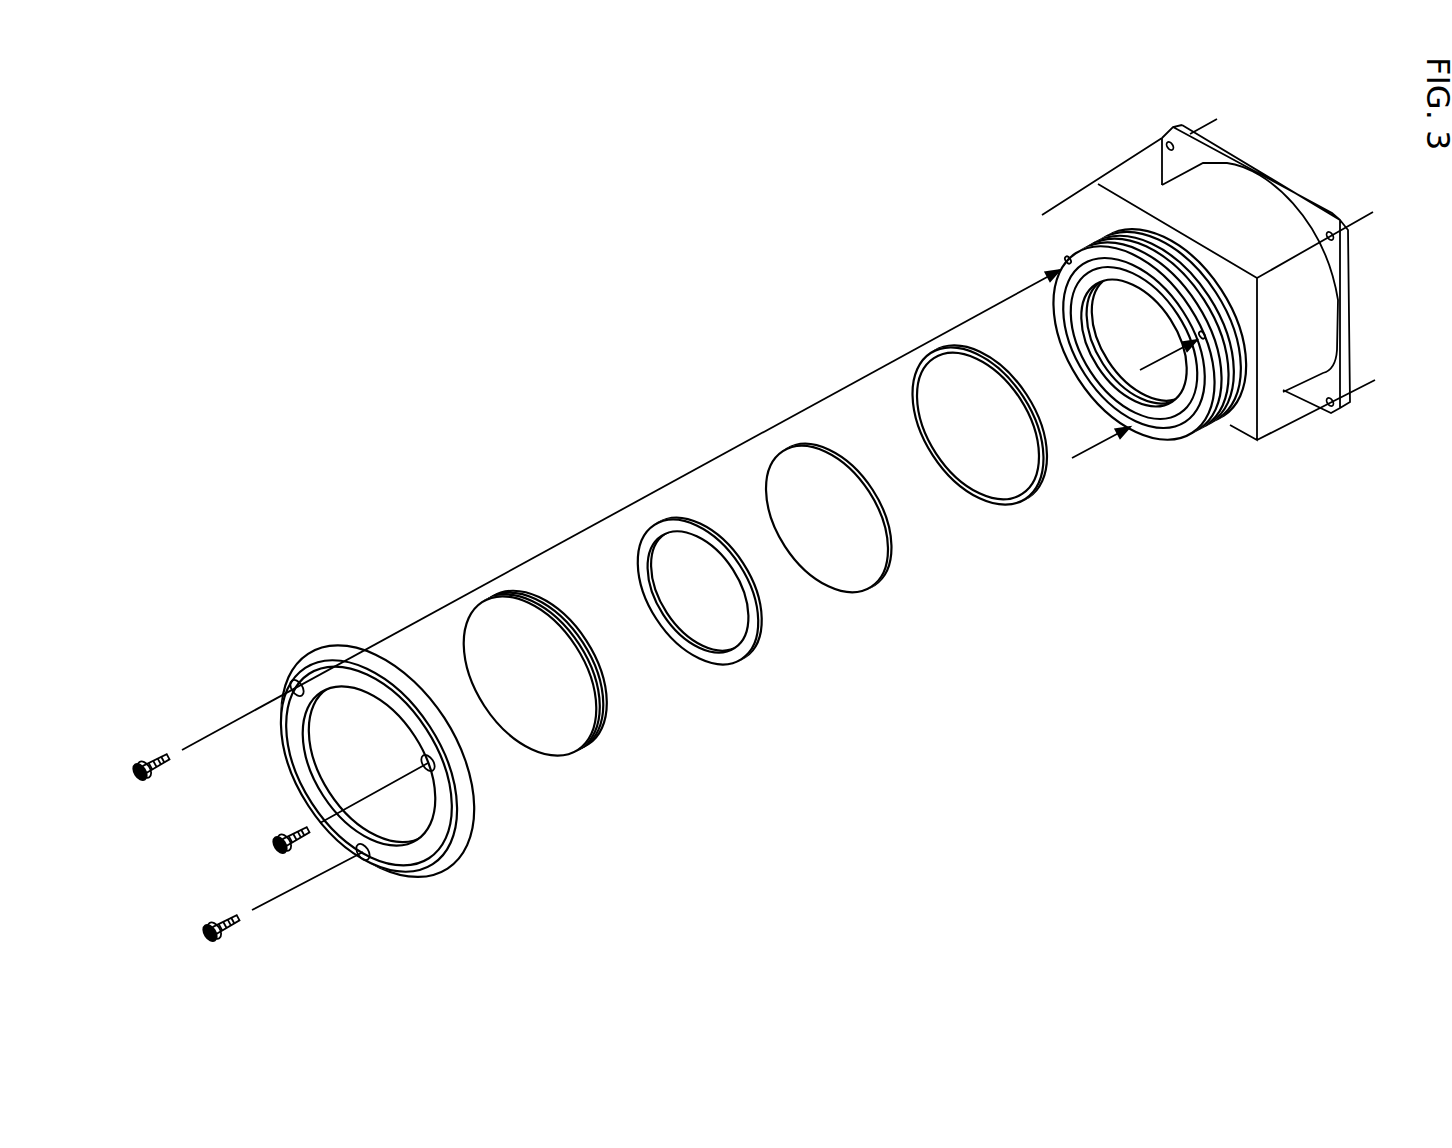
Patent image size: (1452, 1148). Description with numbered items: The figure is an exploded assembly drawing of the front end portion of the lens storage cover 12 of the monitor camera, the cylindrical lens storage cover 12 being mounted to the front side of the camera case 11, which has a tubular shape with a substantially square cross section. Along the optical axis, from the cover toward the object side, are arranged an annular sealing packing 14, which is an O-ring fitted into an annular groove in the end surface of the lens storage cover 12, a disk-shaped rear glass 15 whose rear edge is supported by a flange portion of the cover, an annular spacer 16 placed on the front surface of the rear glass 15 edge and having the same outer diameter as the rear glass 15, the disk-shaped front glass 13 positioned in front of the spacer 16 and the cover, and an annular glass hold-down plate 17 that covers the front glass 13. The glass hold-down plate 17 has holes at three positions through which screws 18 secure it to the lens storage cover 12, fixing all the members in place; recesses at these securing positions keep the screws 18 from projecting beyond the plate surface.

The camera case 11 is at (1357, 309).
The lens storage cover 12 is at (1229, 215).
The front glass 13 is at (583, 758).
The sealing packing 14 is at (1025, 503).
The rear glass 15 is at (867, 587).
The spacer 16 is at (740, 668).
The glass hold-down plate 17 is at (458, 855).
The screws 18 is at (133, 765).